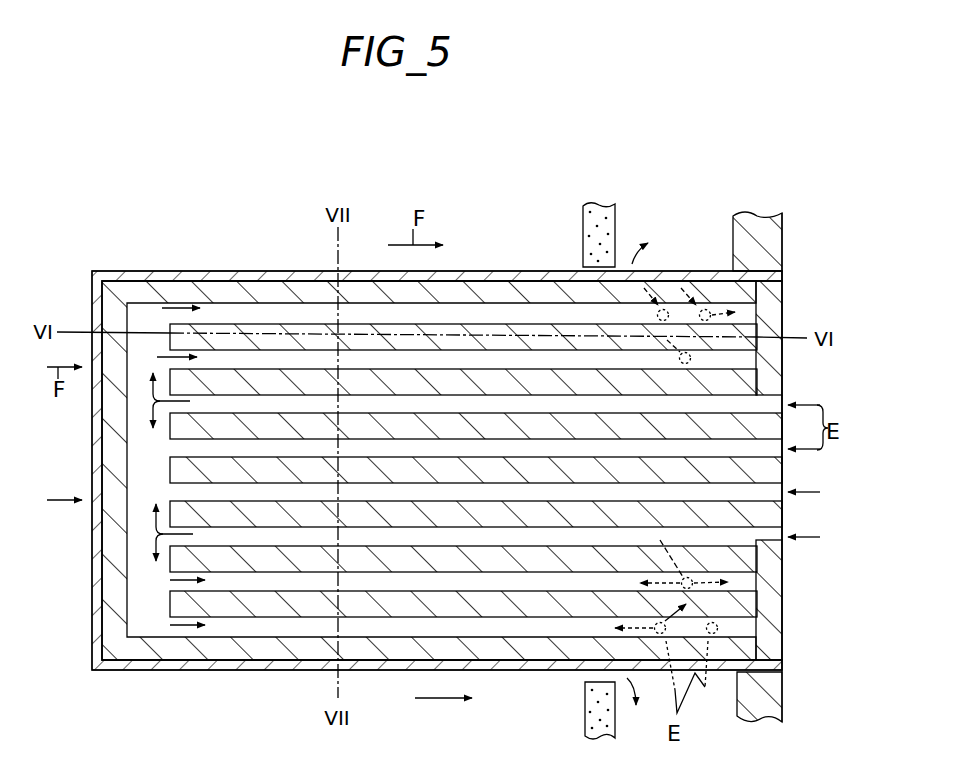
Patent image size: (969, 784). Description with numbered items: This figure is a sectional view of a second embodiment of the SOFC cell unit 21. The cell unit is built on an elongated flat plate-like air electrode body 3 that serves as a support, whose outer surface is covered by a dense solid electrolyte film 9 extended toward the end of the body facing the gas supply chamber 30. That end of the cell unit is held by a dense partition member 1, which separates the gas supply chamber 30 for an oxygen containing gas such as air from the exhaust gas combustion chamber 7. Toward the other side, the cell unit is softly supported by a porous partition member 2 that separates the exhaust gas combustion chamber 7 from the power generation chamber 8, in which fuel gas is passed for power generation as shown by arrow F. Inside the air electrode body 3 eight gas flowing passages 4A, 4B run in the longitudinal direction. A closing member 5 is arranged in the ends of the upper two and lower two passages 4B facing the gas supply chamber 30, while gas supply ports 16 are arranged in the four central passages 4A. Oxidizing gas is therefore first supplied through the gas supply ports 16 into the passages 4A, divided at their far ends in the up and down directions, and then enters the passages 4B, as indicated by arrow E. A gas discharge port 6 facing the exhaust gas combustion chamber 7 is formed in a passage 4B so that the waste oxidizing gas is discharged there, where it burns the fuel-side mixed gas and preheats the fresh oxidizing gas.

The dense partition member 1 is at (758, 223).
The porous partition member 2 is at (602, 204).
The air electrode body 3 is at (267, 281).
The gas flowing passages 4A is at (550, 492).
The gas flowing passages 4B is at (498, 358).
The closing member 5 is at (783, 298).
The gas discharge port 6 is at (703, 309).
The exhaust gas combustion chamber 7 is at (667, 217).
The power generation chamber 8 is at (283, 207).
The solid electrolyte film 9 is at (165, 271).
The gas supply port 16 is at (787, 395).
The SOFC cell unit 21 is at (112, 259).
The gas supply chamber 30 is at (833, 493).